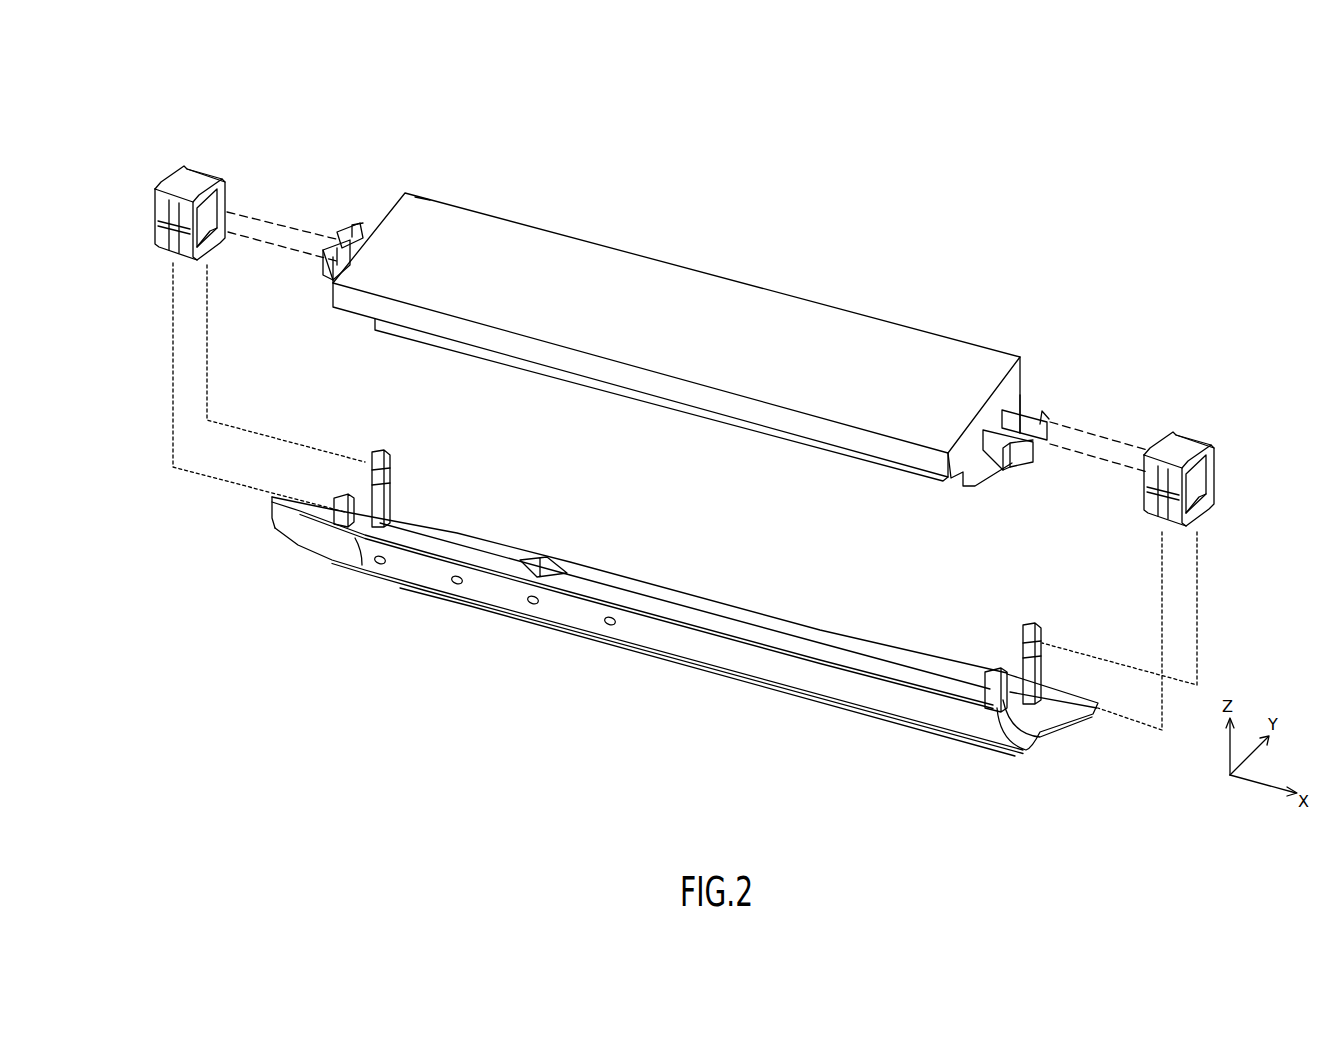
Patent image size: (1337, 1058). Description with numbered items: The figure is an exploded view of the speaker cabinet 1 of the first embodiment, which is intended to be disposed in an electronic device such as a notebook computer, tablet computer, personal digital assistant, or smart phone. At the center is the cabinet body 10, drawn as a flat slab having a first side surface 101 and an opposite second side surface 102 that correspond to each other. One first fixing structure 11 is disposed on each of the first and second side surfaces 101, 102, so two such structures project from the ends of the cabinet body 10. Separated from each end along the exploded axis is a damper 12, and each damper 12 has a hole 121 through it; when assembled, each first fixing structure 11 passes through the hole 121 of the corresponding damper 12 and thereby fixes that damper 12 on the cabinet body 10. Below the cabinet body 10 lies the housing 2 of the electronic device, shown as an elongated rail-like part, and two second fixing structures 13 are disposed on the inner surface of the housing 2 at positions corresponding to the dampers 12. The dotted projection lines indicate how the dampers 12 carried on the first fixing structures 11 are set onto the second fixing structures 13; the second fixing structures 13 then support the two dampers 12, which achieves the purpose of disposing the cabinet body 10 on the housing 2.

The speaker cabinet 1 is at (664, 230).
The cabinet body 10 is at (738, 281).
The first side surface 101 is at (1017, 383).
The second side surface 102 is at (378, 222).
The first fixing structure 11 is at (349, 212).
The damper 12 is at (203, 168).
The hole 121 is at (218, 192).
The second fixing structure 13 is at (340, 472).
The housing 2 is at (689, 665).